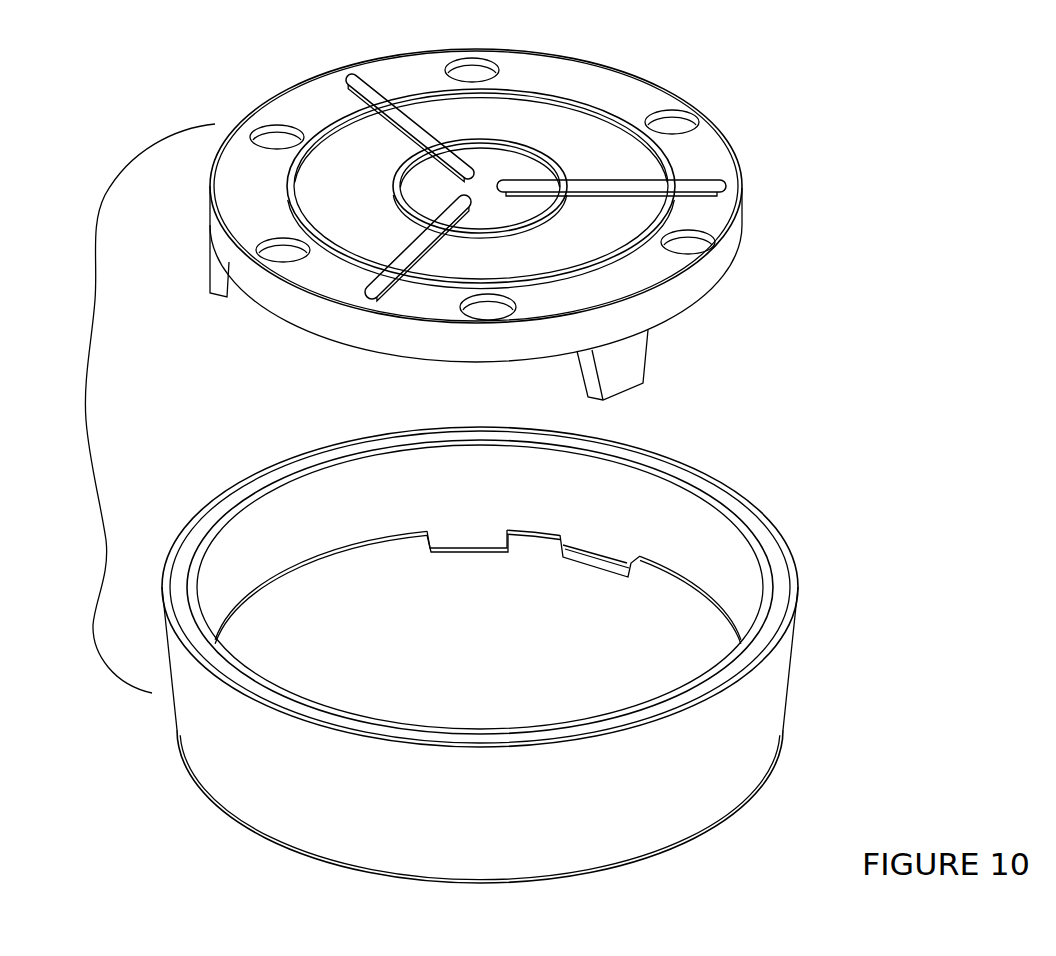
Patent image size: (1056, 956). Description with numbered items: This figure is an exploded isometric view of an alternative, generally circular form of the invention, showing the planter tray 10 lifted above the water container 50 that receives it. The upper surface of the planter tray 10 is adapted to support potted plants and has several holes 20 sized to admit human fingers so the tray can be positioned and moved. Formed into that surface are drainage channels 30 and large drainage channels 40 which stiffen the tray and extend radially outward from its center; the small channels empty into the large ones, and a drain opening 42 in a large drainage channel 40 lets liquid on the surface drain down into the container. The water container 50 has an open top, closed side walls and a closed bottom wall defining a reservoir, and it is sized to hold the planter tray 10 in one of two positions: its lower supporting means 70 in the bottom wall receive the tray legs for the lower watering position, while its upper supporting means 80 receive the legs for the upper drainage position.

The planter tray 10 is at (733, 157).
The holes 20 is at (515, 312).
The drainage channels 30 is at (390, 187).
The large drainage channels 40 is at (407, 132).
The drain opening 42 is at (413, 263).
The water container 50 is at (764, 640).
The lower supporting means 70 is at (463, 537).
The upper supporting means 80 is at (598, 560).